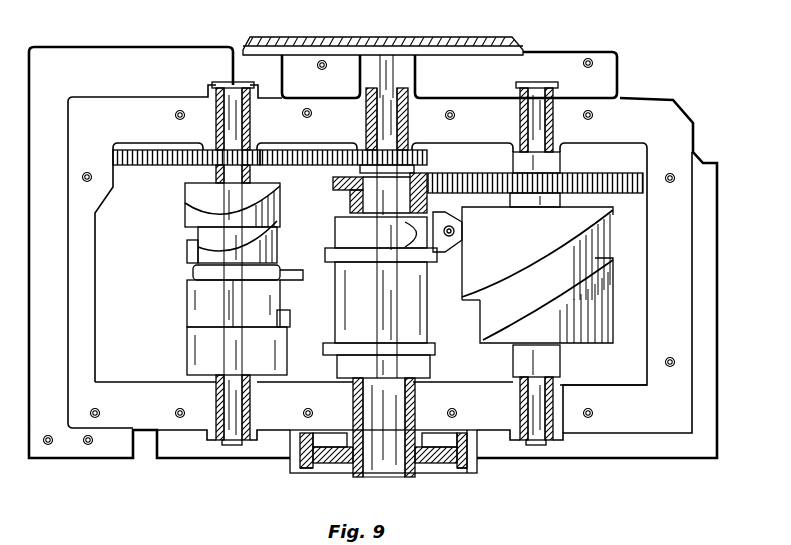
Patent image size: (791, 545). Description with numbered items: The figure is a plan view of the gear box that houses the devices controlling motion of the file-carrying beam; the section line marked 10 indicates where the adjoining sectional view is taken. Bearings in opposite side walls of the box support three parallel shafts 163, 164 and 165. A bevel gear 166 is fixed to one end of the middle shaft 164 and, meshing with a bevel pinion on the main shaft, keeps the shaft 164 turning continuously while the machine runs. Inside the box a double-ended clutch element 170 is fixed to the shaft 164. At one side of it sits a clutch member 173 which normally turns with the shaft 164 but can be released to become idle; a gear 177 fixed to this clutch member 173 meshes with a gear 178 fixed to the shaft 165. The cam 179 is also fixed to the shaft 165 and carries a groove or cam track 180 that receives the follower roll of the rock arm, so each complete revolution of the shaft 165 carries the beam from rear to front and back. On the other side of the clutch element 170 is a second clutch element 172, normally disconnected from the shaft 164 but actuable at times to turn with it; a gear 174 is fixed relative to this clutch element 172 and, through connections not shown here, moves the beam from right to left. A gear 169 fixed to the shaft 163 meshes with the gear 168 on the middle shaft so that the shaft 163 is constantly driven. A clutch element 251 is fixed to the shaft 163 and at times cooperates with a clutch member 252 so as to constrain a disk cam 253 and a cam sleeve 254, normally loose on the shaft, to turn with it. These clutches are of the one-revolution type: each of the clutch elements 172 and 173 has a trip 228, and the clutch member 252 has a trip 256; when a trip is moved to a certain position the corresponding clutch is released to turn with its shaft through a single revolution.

The section line 10 is at (258, 20).
The bevel gear 166 is at (483, 42).
The shaft 163 is at (227, 440).
The middle shaft 164 is at (381, 467).
The shaft 165 is at (532, 442).
The gear 169 is at (160, 165).
The gear 168 is at (427, 158).
The gear 178 is at (628, 174).
The gear 177 is at (338, 184).
The clutch member 173 is at (352, 225).
The trip 228 is at (330, 256).
The double-ended clutch element 170 is at (352, 314).
The second clutch element 172 is at (362, 362).
The cam sleeve 254 is at (193, 213).
The disk cam 253 is at (193, 272).
The clutch member 252 is at (195, 309).
The trip 256 is at (280, 312).
The clutch element 251 is at (197, 345).
The cam track 180 is at (595, 246).
The cam 179 is at (615, 297).
The gear 174 is at (470, 468).